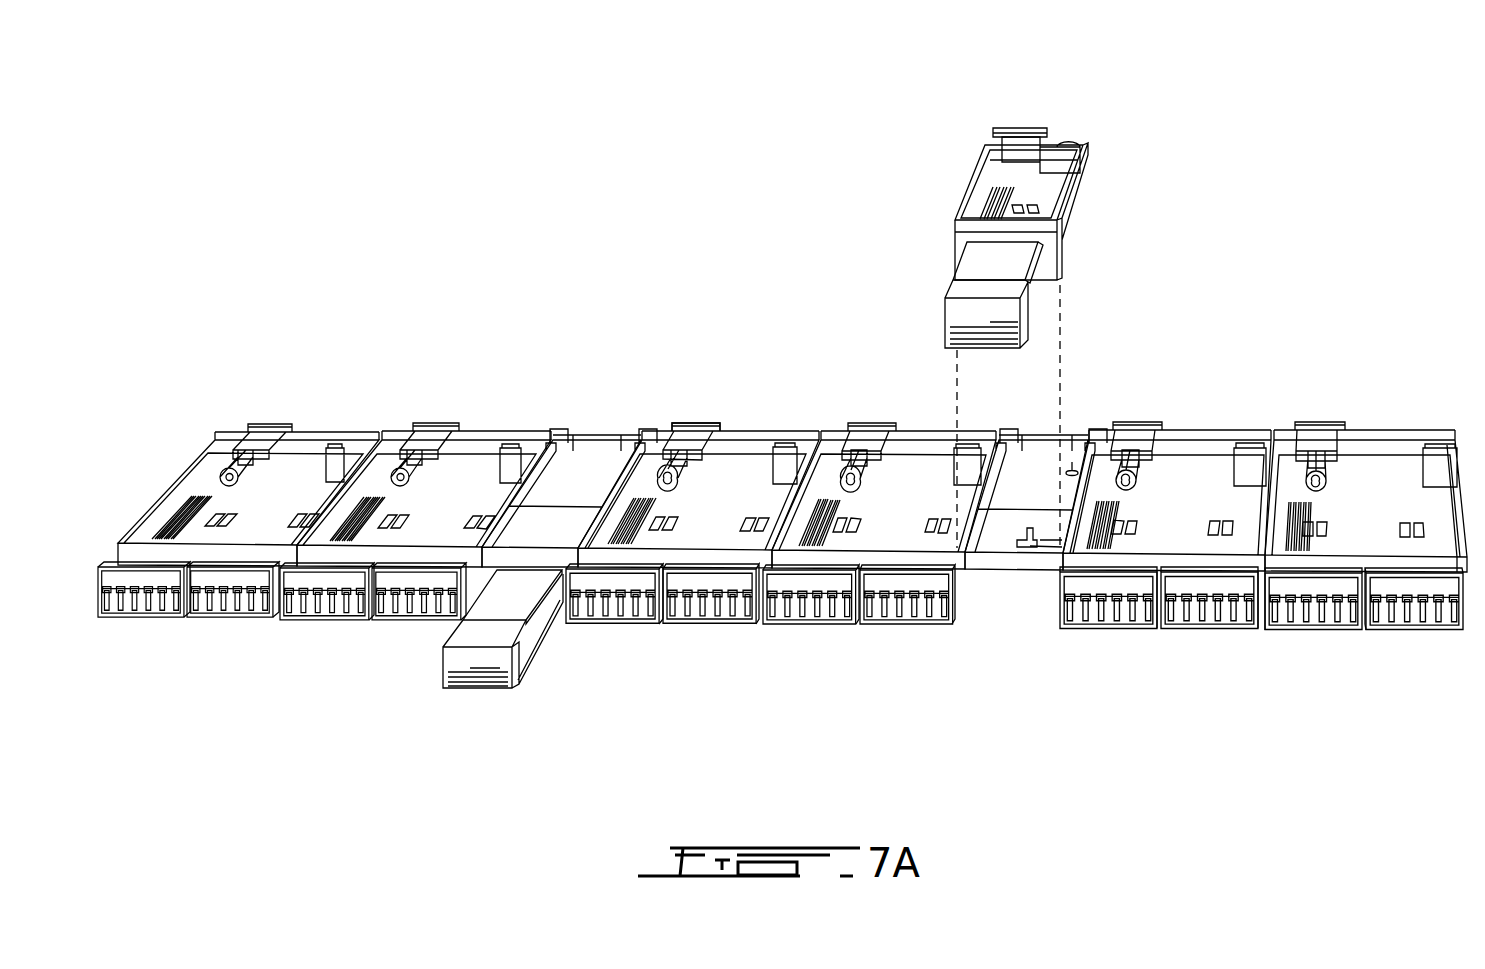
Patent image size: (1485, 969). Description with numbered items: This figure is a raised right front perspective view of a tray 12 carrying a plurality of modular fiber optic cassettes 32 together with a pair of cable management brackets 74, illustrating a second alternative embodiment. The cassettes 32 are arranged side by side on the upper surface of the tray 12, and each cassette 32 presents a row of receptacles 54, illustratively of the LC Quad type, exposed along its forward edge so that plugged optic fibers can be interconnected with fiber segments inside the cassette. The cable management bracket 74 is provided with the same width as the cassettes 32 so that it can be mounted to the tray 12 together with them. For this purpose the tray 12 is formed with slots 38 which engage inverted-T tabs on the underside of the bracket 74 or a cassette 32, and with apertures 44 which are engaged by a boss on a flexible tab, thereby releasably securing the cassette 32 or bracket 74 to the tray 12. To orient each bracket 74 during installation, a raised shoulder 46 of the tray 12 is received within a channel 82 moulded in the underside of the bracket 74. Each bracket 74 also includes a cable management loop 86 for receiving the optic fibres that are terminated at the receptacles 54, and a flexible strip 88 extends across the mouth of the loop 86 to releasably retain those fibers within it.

The tray 12 is at (1033, 468).
The fiber optic cassette 32 is at (476, 440).
The slot 38 is at (1019, 543).
The aperture 44 is at (1078, 469).
The raised shoulder 46 is at (1048, 541).
The receptacle 54 is at (920, 624).
The cable management bracket 74 is at (590, 437).
The channel 82 is at (1085, 215).
The cable management loop 86 is at (481, 672).
The flexible strip 88 is at (507, 612).